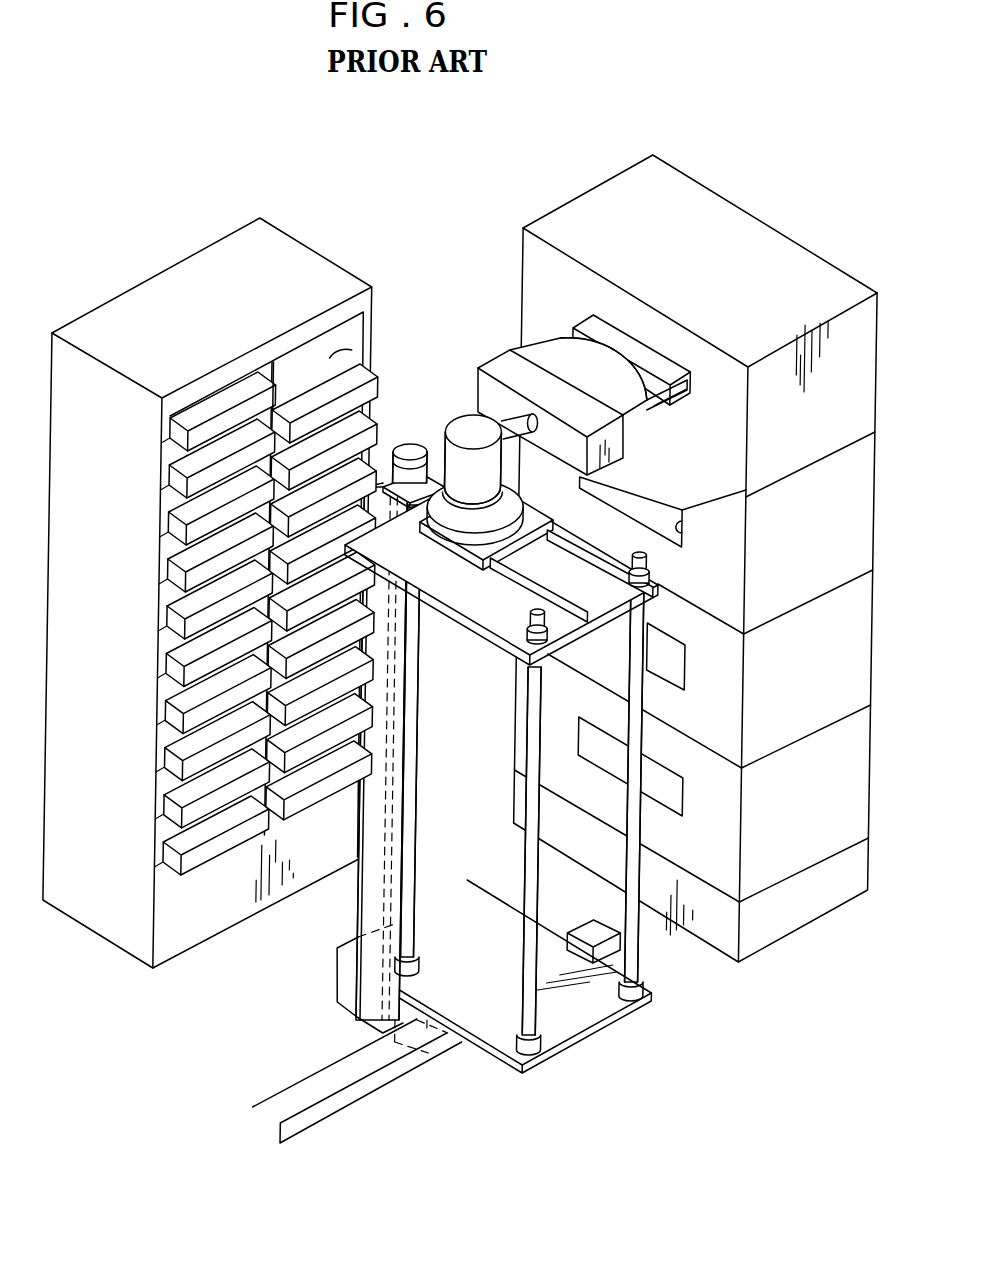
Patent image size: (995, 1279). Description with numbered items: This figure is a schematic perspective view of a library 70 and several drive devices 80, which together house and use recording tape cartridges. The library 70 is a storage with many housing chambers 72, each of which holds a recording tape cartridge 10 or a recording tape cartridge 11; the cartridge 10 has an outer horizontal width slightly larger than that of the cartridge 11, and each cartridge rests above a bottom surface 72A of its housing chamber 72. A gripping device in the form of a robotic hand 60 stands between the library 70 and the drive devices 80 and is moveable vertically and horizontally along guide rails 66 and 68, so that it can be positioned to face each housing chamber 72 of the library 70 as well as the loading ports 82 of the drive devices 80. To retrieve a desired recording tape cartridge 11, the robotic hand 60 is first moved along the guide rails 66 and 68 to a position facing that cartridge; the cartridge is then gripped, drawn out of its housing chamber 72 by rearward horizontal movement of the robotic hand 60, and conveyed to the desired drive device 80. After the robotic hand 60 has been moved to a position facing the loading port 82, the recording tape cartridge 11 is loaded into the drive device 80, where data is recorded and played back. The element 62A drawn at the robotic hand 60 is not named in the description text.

The recording tape cartridge 10 is at (221, 853).
The recording tape cartridge 11 is at (615, 340).
The robotic hand 60 is at (562, 357).
The guide rail 62A is at (650, 405).
The guide rail 66 is at (424, 777).
The guide rail 68 is at (581, 555).
The library 70 is at (178, 307).
The housing chamber 72 is at (298, 352).
The bottom surface 72A is at (330, 358).
The drive device 80 is at (742, 258).
The loading port 82 is at (691, 533).